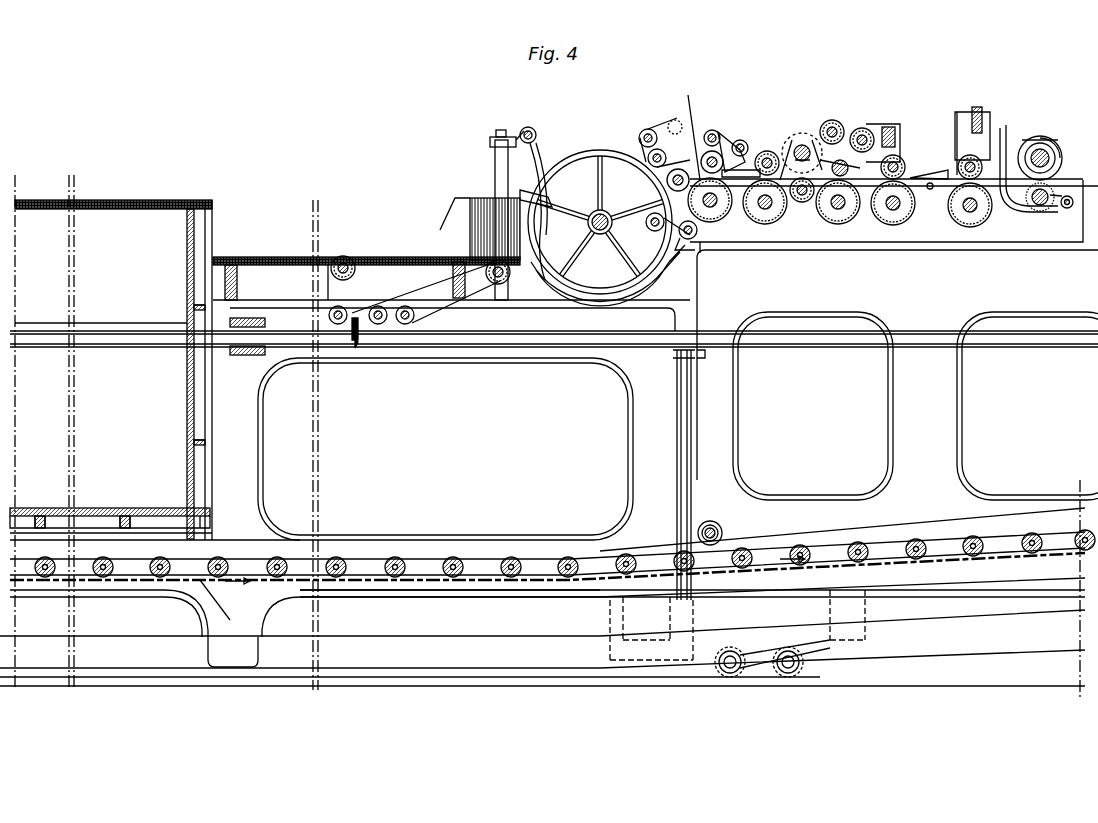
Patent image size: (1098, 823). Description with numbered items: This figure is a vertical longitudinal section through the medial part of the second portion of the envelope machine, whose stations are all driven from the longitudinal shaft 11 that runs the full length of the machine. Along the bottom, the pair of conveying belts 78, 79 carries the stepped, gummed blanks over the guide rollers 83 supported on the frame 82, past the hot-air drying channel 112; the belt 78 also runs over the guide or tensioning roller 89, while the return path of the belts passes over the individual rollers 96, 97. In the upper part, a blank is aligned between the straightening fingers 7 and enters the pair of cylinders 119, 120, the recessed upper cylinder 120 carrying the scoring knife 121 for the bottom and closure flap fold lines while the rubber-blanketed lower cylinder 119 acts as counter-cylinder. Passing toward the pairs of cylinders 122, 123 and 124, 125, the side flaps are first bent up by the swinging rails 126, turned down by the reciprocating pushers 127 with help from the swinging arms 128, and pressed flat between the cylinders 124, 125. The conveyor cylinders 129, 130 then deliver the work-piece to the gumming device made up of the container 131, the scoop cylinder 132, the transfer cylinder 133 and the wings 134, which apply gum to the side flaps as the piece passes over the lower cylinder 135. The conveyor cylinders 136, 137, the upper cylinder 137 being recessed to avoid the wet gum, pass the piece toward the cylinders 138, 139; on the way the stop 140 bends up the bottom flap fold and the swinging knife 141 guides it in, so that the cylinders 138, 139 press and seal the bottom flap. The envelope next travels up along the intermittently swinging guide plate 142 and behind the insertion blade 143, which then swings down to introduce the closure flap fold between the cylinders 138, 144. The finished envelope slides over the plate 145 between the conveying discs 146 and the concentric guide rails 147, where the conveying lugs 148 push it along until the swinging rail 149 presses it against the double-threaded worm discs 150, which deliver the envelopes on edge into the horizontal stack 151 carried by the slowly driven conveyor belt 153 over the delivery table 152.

The straightening fingers 7 is at (1068, 209).
The longitudinal shaft 11 is at (648, 340).
The conveying belt 78 is at (236, 575).
The conveying belt 79 is at (360, 582).
The frame 82 is at (482, 556).
The guide rollers 83 is at (565, 560).
The guide or tensioning roller 89 is at (720, 531).
The roller 96 is at (788, 673).
The roller 97 is at (730, 673).
The channel 112 is at (512, 636).
The counter-cylinder 119 is at (1041, 212).
The upper cylinder 120 is at (1040, 136).
The scoring knife 121 is at (1058, 150).
The cylinder 122 is at (960, 225).
The cylinder 123 is at (970, 155).
The cylinder 124 is at (904, 223).
The cylinder 125 is at (902, 160).
The rails 126 is at (995, 200).
The pushers 127 is at (935, 170).
The arms 128 is at (957, 128).
The conveyor cylinder 129 is at (846, 222).
The conveyor cylinder 130 is at (848, 168).
The container 131 is at (883, 127).
The scoop cylinder 132 is at (862, 128).
The transfer cylinder 133 is at (832, 120).
The wings 134 is at (802, 133).
The lower cylinder 135 is at (803, 202).
The conveyor cylinder 136 is at (778, 222).
The upper cylinder 137 is at (767, 151).
The cylinder 138 is at (725, 216).
The cylinder 139 is at (714, 130).
The stop 140 is at (745, 168).
The swinging knife 141 is at (741, 140).
The guide plate 142 is at (681, 130).
The insertion blade 143 is at (710, 150).
The cylinder 144 is at (667, 185).
The plate 145 is at (697, 230).
The conveying discs 146 is at (598, 150).
The guide rails 147 is at (650, 282).
The conveying lugs 148 is at (553, 197).
The swinging rail 149 is at (536, 170).
The discs 150 is at (495, 157).
The horizontal stack 151 is at (486, 198).
The delivery table 152 is at (392, 266).
The conveyor belt 153 is at (390, 257).